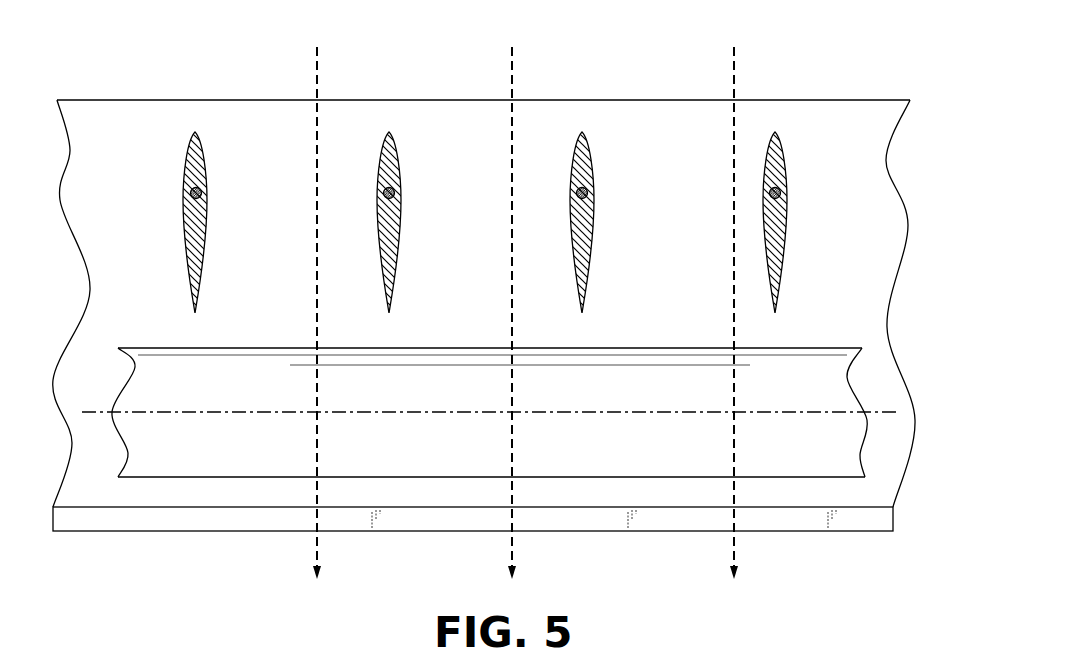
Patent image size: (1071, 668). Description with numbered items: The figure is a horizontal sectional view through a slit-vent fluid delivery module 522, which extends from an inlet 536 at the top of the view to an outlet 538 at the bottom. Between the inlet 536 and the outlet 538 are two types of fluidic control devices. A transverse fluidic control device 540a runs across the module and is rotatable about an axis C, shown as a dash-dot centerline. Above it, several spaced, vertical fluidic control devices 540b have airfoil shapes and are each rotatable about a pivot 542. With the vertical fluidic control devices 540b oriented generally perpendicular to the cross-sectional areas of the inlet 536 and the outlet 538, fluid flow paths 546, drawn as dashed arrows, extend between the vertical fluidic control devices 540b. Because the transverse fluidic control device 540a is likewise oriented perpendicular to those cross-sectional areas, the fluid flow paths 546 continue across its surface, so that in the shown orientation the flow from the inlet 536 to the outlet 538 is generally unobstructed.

The slit-vent fluid delivery module 522 is at (155, 90).
The inlet 536 is at (235, 99).
The outlet 538 is at (265, 532).
The transverse fluidic control device 540a is at (633, 348).
The vertical fluidic control devices 540b is at (395, 270).
The pivots 542 is at (396, 193).
The fluid flow paths 546 is at (316, 265).
The axis C is at (872, 408).